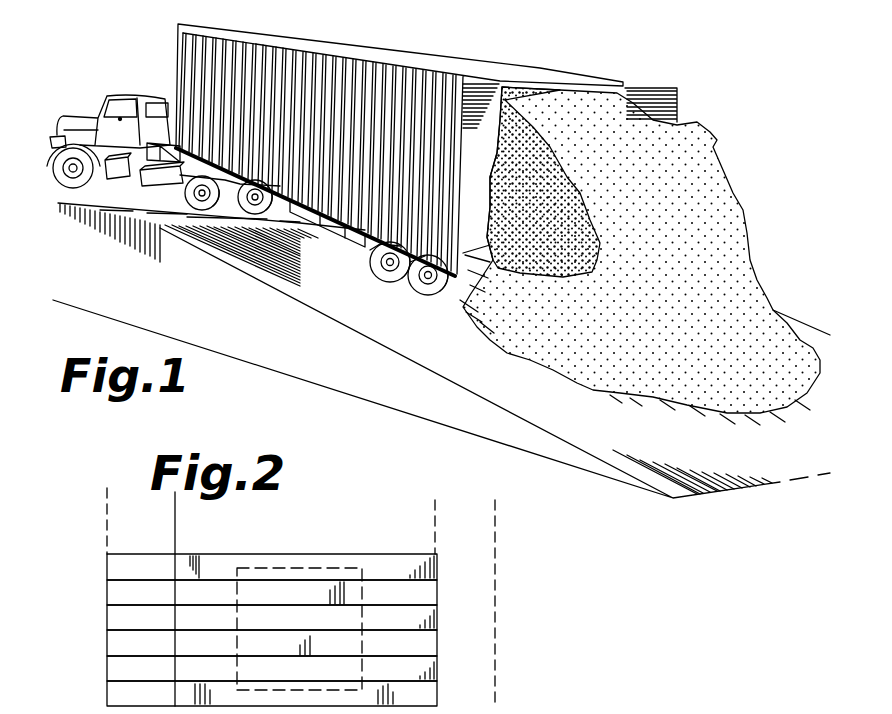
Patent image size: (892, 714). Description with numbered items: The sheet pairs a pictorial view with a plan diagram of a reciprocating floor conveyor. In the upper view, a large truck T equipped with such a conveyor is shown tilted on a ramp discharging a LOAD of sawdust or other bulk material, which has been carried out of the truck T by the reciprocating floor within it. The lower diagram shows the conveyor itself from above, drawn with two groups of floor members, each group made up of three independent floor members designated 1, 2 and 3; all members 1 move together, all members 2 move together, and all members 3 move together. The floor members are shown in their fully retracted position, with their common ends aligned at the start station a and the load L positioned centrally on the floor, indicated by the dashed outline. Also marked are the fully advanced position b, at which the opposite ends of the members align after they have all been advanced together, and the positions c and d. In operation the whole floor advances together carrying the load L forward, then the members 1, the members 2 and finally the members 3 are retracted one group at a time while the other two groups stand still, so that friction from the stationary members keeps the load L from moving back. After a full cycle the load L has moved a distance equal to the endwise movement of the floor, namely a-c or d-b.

In FIG. 1, the truck T is at (446, 58).
In FIG. 1, the load LOAD is at (705, 155).
In FIG. 2, the load L is at (310, 572).
In FIG. 2, the start station a is at (98, 508).
In FIG. 2, the fully advanced position b is at (496, 591).
In FIG. 2, the position c is at (181, 588).
In FIG. 2, the position d is at (442, 514).
In FIG. 2, the floor members of group one 1 is at (272, 606).
In FIG. 2, the floor members of group two 2 is at (272, 631).
In FIG. 2, the floor members of group three 3 is at (272, 656).